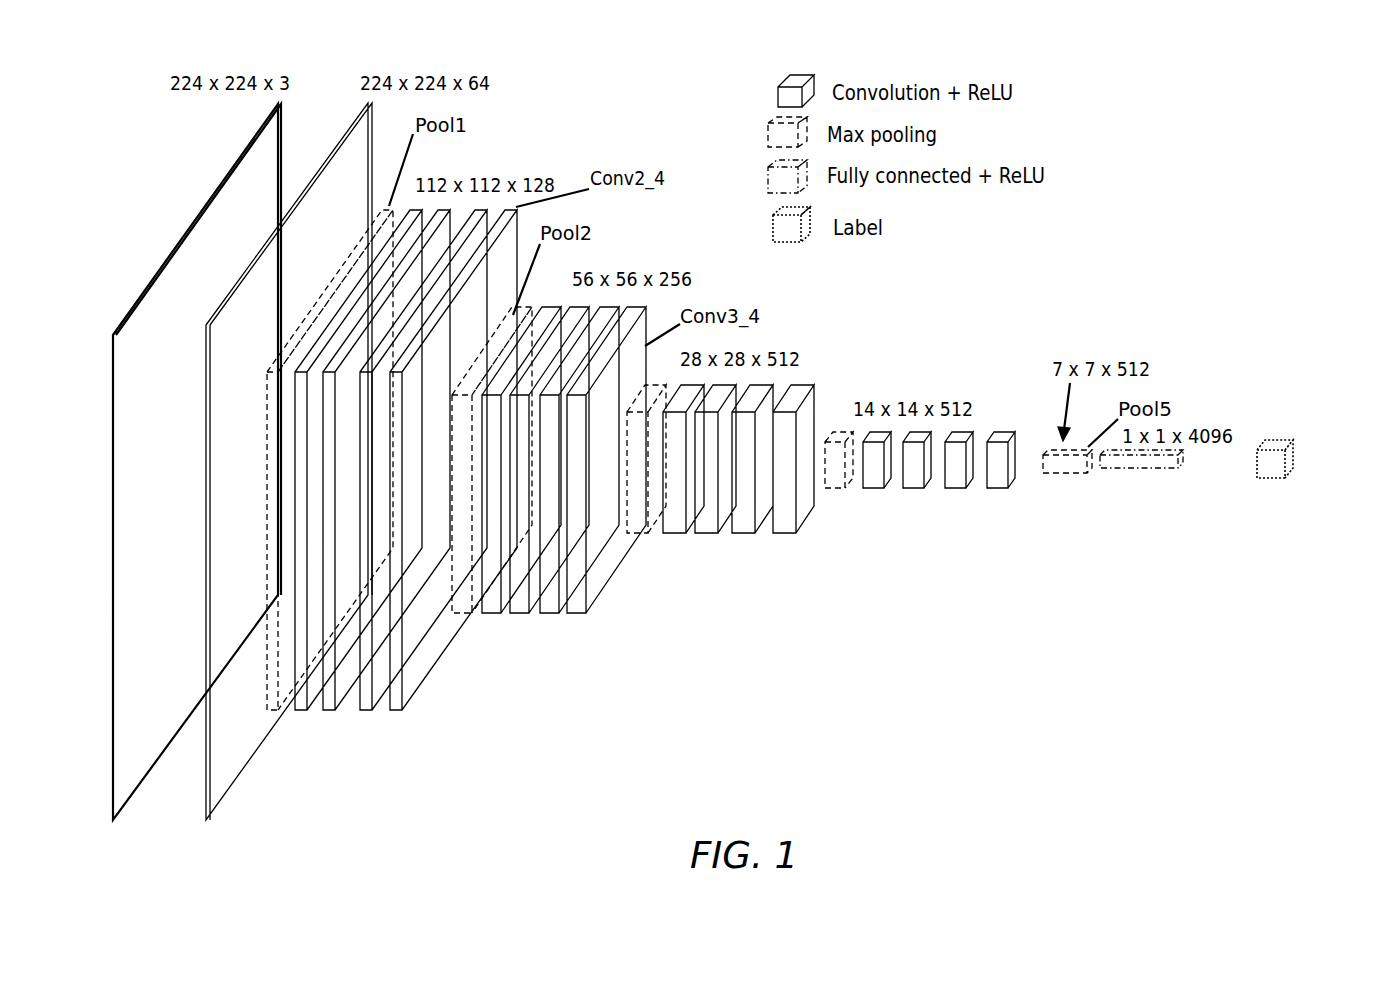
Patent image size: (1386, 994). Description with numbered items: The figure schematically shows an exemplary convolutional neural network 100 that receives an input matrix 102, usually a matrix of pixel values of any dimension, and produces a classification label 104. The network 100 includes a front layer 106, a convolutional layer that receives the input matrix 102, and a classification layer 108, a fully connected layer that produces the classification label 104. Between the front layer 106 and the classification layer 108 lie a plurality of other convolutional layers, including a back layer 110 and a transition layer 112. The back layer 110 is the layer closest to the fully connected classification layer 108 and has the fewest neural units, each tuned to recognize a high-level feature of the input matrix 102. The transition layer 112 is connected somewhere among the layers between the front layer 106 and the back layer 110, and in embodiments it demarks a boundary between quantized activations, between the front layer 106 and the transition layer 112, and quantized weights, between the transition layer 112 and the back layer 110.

The convolutional neural network 100 is at (598, 114).
The input matrix 102 is at (197, 217).
The classification label 104 is at (1273, 448).
The front layer 106 is at (347, 127).
The classification layer 108 is at (1128, 475).
The back layer 110 is at (1005, 432).
The transition layer 112 is at (792, 402).